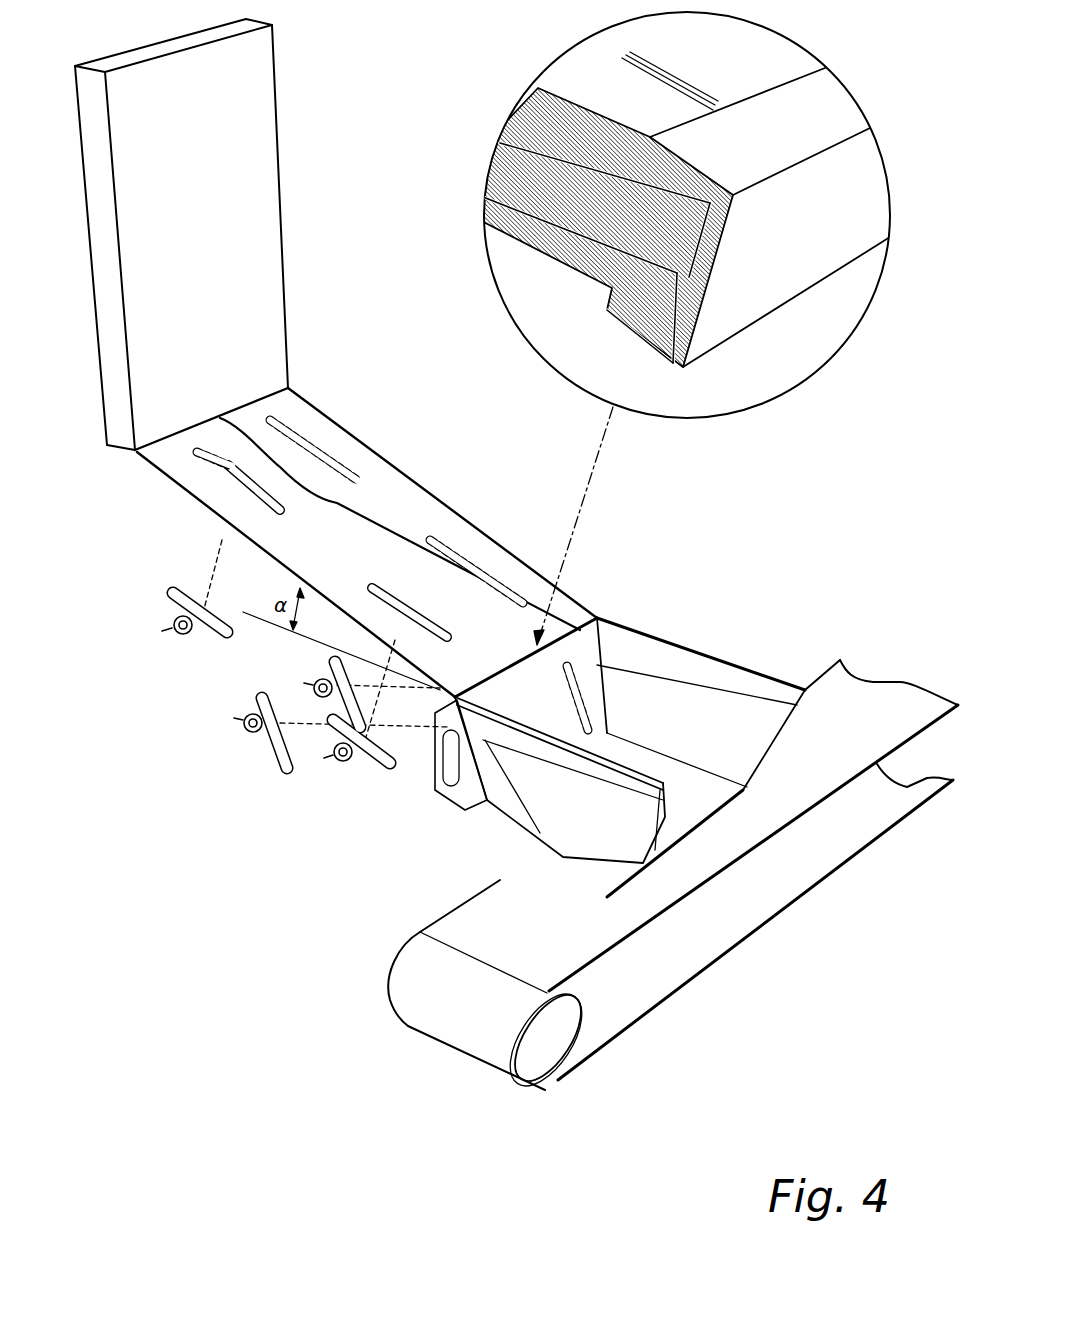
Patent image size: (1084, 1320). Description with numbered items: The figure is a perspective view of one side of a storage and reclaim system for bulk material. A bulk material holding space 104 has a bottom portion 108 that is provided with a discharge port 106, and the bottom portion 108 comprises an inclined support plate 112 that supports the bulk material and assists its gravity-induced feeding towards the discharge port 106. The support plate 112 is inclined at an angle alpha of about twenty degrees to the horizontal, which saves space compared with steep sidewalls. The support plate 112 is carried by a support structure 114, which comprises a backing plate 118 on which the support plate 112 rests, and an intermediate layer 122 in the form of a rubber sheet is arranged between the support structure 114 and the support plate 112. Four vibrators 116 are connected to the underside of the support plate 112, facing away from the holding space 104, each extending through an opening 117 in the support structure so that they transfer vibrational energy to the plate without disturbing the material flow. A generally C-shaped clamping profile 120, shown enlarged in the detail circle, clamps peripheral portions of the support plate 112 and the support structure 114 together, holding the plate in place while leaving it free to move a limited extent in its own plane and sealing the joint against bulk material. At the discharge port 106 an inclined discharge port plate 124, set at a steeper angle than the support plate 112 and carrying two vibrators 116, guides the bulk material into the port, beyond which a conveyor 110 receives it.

The bulk material holding space 104 is at (233, 313).
The discharge port 106 is at (612, 735).
The bottom portion 108 is at (198, 492).
The conveyor belt 110 is at (590, 943).
The support plate 112 is at (385, 455).
The support structure 114 is at (433, 785).
The vibrator 116 is at (318, 681).
The opening 117 is at (267, 497).
The backing plate 118 is at (220, 507).
The clamping profile 120 is at (190, 427).
The intermediate layer 122 is at (393, 550).
The discharge port plate 124 is at (578, 650).